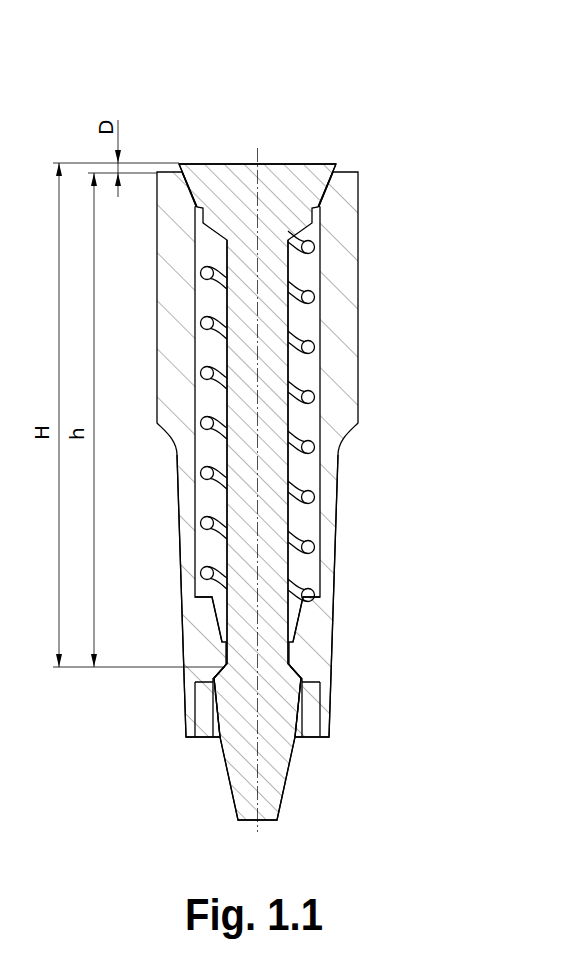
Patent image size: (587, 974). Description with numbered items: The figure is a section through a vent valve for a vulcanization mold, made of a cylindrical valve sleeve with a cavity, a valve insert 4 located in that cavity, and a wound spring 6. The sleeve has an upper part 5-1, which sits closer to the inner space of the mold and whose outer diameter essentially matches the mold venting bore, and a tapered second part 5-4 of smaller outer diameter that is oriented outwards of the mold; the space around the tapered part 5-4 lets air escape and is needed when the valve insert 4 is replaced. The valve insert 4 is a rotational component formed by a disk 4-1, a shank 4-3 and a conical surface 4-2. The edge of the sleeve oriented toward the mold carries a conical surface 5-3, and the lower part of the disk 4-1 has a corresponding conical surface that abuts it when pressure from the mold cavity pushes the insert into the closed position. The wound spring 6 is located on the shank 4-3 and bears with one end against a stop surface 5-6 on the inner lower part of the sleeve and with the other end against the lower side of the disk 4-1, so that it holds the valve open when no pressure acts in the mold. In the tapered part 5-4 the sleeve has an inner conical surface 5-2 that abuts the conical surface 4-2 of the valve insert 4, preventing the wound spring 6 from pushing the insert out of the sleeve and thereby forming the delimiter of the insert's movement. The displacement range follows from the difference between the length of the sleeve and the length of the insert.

The valve insert 4 is at (253, 190).
The disk 4-1 is at (306, 162).
The conical surface 4-2 is at (223, 667).
The shank 4-3 is at (273, 475).
The part of the valve sleeve having greater outer diameter 5-1 is at (357, 333).
The inner conical surface 5-2 is at (305, 673).
The conical surface 5-3 is at (331, 183).
The second part of the sleeve 5-4 is at (339, 512).
The stop surface 5-6 is at (306, 597).
The wound spring 6 is at (312, 283).